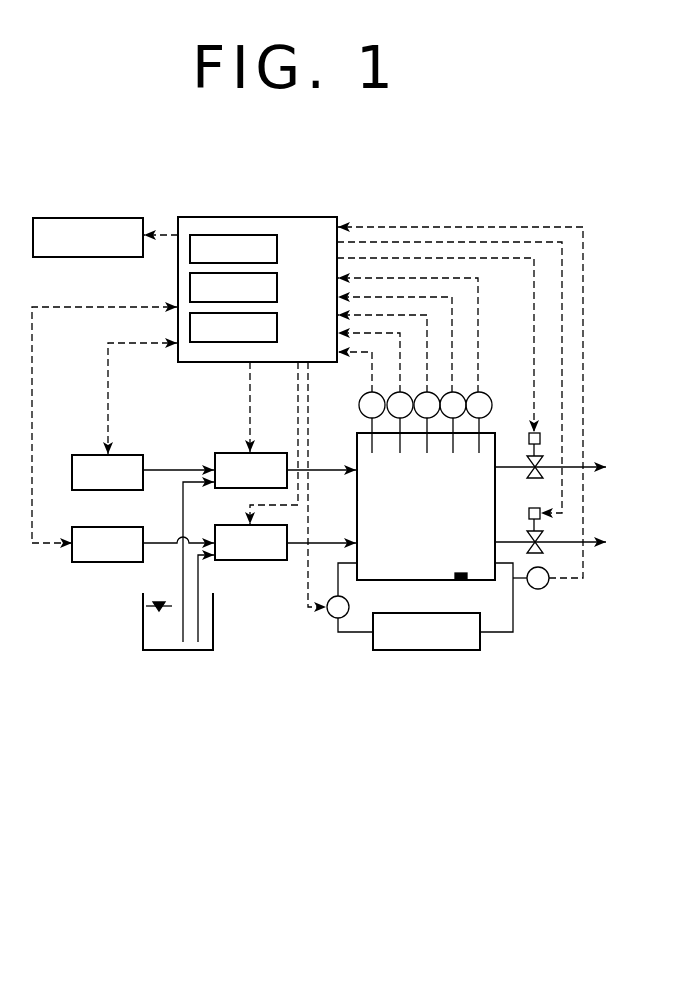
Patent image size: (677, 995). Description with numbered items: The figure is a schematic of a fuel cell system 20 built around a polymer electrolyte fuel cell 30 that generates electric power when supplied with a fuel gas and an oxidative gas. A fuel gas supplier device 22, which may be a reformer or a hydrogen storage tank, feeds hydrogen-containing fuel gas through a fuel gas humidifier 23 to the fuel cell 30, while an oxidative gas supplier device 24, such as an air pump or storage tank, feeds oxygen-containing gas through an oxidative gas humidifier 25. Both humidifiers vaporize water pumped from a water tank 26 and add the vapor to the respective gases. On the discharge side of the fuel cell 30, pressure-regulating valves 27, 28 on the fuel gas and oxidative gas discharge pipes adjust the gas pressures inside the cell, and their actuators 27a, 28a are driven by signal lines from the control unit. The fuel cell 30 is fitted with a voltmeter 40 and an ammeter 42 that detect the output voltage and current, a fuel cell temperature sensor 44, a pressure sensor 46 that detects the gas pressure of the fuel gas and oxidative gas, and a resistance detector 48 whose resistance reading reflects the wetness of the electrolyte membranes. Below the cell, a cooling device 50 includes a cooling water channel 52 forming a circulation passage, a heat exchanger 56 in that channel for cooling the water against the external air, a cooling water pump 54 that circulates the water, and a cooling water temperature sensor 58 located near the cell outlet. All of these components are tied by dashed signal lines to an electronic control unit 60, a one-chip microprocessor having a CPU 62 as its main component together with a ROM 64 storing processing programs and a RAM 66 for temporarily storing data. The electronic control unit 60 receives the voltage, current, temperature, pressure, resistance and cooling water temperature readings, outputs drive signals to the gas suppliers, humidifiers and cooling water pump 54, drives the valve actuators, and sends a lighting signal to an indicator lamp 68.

The fuel cell system 20 is at (459, 206).
The fuel gas supplier device 22 is at (113, 454).
The fuel gas humidifier 23 is at (236, 452).
The oxidative gas supplier device 24 is at (114, 527).
The oxidative gas humidifier 25 is at (276, 561).
The water tank 26 is at (214, 624).
The pressure-regulating valve 27 is at (544, 471).
The actuator 27a is at (542, 437).
The pressure-regulating valve 28 is at (544, 551).
The actuator 28a is at (542, 516).
The fuel cell 30 is at (357, 458).
The voltmeter 40 is at (359, 404).
The ammeter 42 is at (398, 438).
The fuel cell temperature sensor 44 is at (432, 439).
The pressure sensor 46 is at (455, 438).
The resistance detector 48 is at (492, 404).
The cooling device 50 is at (502, 644).
The cooling water channel 52 is at (514, 616).
The cooling water pump 54 is at (349, 604).
The heat exchanger 56 is at (466, 606).
The cooling water temperature sensor 58 is at (549, 588).
The electronic control unit 60 is at (234, 217).
The CPU 62 is at (278, 250).
The ROM 64 is at (278, 290).
The RAM 66 is at (278, 330).
The indicator lamp 68 is at (63, 218).